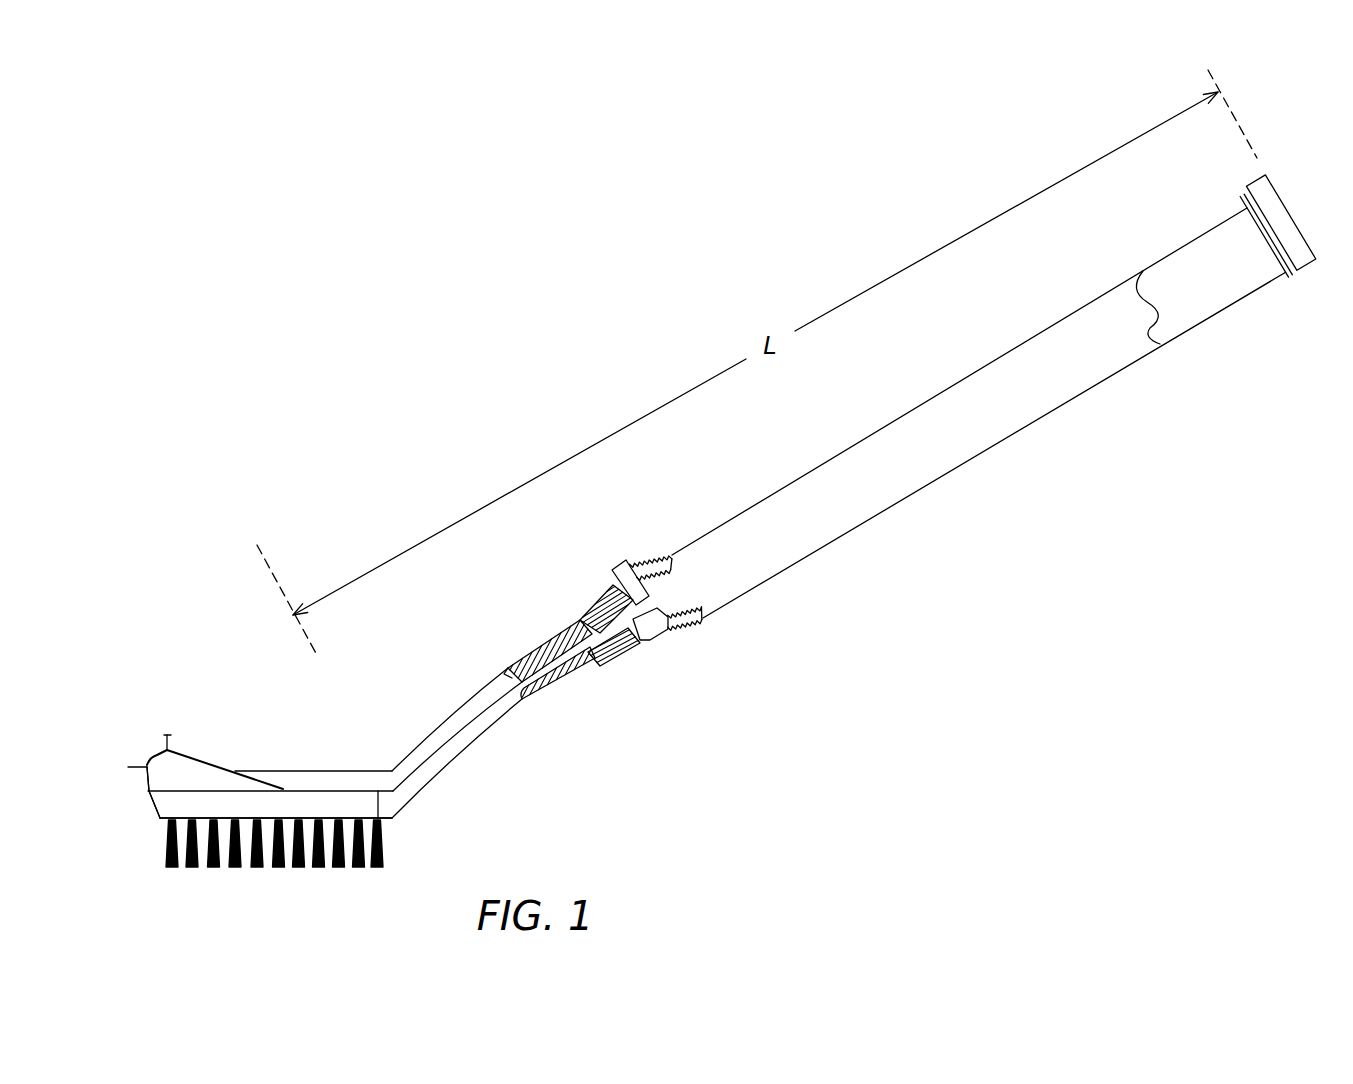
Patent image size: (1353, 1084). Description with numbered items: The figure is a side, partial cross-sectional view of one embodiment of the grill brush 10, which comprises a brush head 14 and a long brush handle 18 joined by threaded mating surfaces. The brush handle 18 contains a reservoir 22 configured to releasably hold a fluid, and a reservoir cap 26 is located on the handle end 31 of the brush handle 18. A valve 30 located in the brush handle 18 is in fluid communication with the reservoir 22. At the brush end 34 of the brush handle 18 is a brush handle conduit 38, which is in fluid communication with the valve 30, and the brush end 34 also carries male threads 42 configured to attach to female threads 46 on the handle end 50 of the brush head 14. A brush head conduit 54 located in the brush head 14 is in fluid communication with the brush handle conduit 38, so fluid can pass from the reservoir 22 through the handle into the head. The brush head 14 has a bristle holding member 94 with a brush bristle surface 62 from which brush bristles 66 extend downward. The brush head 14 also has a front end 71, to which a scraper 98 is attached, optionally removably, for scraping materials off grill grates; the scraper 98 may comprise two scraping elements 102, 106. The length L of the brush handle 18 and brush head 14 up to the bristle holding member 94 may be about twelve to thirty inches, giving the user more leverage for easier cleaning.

The grill brush 10 is at (812, 616).
The brush head 14 is at (347, 780).
The brush handle 18 is at (1063, 406).
The reservoir 22 is at (930, 423).
The reservoir cap 26 is at (1300, 272).
The valve 30 is at (613, 571).
The handle end 31 is at (1240, 197).
The brush end 34 is at (625, 660).
The brush handle conduit 38 is at (640, 641).
The male threads 42 is at (610, 597).
The female threads 46 is at (587, 625).
The handle end 50 is at (603, 660).
The brush head conduit 54 is at (530, 700).
The brush bristle surface 62 is at (160, 818).
The brush bristles 66 is at (208, 868).
The front end 71 is at (140, 818).
The bristle holding member 94 is at (293, 803).
The scraper 98 is at (107, 770).
The scraping element 102 is at (136, 804).
The scraping element 106 is at (168, 737).